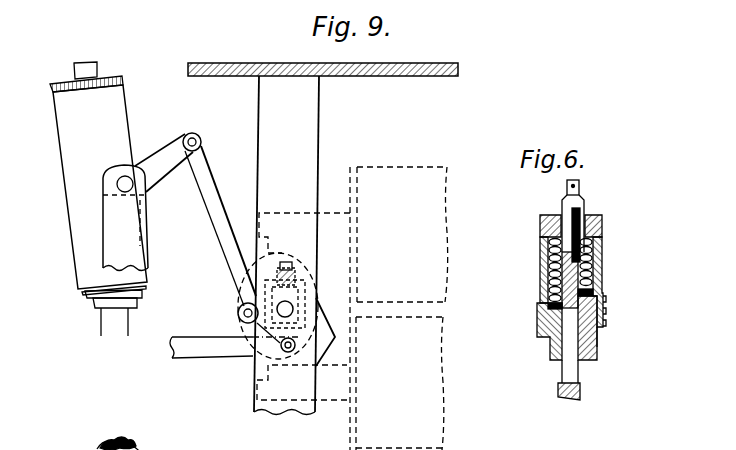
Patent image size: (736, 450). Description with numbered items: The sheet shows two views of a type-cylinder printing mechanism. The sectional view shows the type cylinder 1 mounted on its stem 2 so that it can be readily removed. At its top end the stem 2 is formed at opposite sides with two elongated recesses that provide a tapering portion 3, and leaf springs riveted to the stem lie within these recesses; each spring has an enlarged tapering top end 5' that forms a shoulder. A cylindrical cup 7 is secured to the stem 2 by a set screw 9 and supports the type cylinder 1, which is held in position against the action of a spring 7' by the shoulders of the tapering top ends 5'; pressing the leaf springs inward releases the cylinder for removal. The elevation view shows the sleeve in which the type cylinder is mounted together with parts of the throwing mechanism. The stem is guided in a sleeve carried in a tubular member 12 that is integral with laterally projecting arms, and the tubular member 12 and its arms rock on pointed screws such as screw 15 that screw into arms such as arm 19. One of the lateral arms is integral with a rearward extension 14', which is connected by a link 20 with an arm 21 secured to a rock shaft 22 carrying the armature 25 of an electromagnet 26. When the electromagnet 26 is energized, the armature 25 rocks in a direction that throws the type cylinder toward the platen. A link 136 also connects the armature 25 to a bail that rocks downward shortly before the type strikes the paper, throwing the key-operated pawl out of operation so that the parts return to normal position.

In FIG. 9, the tubular member 12 is at (60, 146).
In FIG. 9, the rearward extension 14' is at (164, 156).
In FIG. 9, the arm 19 is at (134, 244).
In FIG. 9, the link 20 is at (214, 238).
In FIG. 9, the arm 21 is at (247, 327).
In FIG. 9, the link 136 is at (211, 352).
In FIG. 9, the rock shaft 22 is at (291, 309).
In FIG. 9, the armature 25 is at (326, 320).
In FIG. 9, the electromagnet 26 is at (345, 424).
In FIG. 9, the stem 2 is at (96, 328).
In FIG. 6, the stem 2 is at (556, 380).
In FIG. 9, the pointed screw 15 is at (105, 444).
In FIG. 6, the enlarged tapering top end 5' is at (584, 221).
In FIG. 6, the tapering portion 3 is at (603, 223).
In FIG. 6, the type cylinder 1 is at (540, 247).
In FIG. 6, the cylindrical cup 7 is at (535, 275).
In FIG. 6, the spring 7' is at (606, 268).
In FIG. 6, the set screw 9 is at (540, 338).